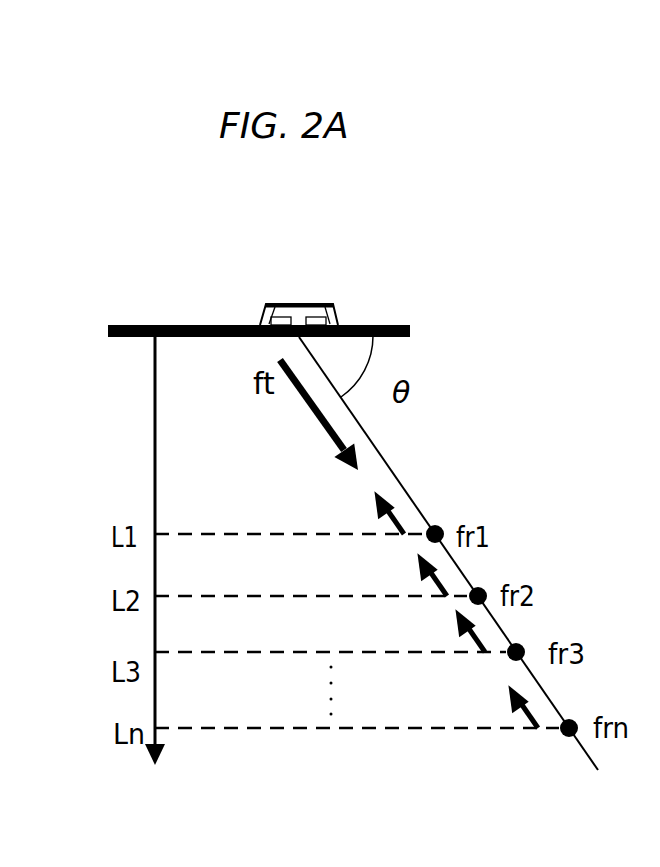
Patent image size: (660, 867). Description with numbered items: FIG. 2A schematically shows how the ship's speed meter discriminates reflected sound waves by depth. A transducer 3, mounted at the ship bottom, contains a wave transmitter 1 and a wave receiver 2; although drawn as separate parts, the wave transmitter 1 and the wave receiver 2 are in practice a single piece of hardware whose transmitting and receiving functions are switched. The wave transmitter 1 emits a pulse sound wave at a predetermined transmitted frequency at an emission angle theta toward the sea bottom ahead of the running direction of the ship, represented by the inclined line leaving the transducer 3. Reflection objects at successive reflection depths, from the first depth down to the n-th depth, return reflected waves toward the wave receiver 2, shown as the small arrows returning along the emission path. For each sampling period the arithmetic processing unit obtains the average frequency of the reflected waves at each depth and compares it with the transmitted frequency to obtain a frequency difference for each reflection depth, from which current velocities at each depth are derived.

The wave transmitter 1 is at (329, 303).
The wave receiver 2 is at (258, 320).
The transducer 3 is at (316, 297).